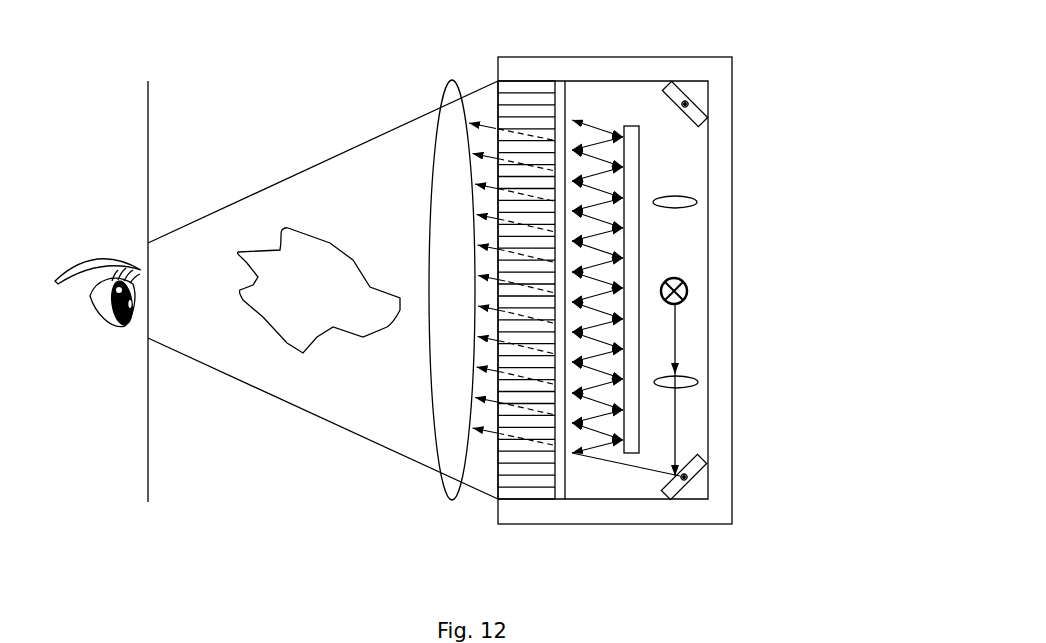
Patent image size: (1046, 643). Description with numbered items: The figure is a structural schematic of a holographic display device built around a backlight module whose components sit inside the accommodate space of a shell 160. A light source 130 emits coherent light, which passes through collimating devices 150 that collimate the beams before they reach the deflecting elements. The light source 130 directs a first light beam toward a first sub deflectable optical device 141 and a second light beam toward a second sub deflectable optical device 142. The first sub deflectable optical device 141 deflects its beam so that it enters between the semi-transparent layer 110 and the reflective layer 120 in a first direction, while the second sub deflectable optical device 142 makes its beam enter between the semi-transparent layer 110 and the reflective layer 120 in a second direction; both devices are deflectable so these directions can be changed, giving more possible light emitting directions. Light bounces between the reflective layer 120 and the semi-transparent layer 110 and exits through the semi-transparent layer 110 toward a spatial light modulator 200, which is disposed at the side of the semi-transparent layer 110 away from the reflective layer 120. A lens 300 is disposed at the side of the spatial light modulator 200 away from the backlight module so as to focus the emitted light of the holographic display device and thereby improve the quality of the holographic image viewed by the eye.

The semi-transparent layer 110 is at (563, 89).
The reflective layer 120 is at (637, 267).
The light source 130 is at (686, 285).
The first sub deflectable optical device 141 is at (693, 113).
The second sub deflectable optical device 142 is at (703, 462).
The collimating device 150 is at (680, 200).
The shell 160 is at (592, 508).
The spatial light modulator 200 is at (507, 488).
The lens 300 is at (445, 497).